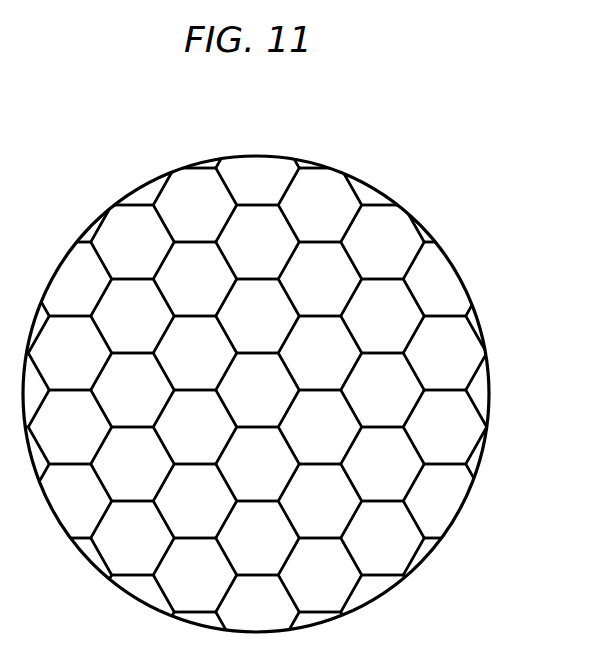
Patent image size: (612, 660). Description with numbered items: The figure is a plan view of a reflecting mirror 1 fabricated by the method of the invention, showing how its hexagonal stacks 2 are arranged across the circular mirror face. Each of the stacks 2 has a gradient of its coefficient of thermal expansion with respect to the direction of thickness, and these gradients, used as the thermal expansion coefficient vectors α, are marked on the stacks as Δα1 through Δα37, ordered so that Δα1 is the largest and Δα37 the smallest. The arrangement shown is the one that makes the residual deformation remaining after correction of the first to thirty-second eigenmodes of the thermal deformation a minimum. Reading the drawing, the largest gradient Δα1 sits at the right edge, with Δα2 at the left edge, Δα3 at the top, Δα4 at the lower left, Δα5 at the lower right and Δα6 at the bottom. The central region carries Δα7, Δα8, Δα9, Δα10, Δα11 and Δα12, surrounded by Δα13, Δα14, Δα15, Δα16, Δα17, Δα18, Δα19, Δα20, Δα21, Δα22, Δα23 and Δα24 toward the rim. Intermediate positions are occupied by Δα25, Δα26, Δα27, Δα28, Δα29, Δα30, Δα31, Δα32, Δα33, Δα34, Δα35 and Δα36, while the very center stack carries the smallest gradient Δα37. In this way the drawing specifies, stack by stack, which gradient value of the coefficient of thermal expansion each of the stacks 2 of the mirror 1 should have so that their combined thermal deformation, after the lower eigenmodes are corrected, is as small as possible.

The reflecting mirror 1 is at (424, 220).
The stacks 2 is at (501, 265).
The CTE gradient Δα 3 is at (258, 168).
The CTE gradient Δα 4 is at (70, 501).
The CTE gradient Δα 5 is at (445, 501).
The CTE gradient Δα 6 is at (258, 612).
The CTE gradient Δα 7 is at (195, 353).
The CTE gradient Δα 8 is at (258, 464).
The CTE gradient Δα 9 is at (320, 353).
The CTE gradient Δα 10 is at (320, 427).
The CTE gradient Δα 11 is at (195, 427).
The CTE gradient Δα 12 is at (258, 316).
The CTE gradient Δα 13 is at (383, 242).
The CTE gradient Δα 14 is at (320, 575).
The CTE gradient Δα 15 is at (70, 353).
The CTE gradient Δα 16 is at (445, 353).
The CTE gradient Δα 17 is at (133, 538).
The CTE gradient Δα 18 is at (195, 205).
The CTE gradient Δα 19 is at (133, 242).
The CTE gradient Δα 20 is at (445, 427).
The CTE gradient Δα 21 is at (195, 575).
The CTE gradient Δα 22 is at (70, 427).
The CTE gradient Δα 23 is at (320, 205).
The CTE gradient Δα 24 is at (383, 538).
The CTE gradient Δα 25 is at (133, 390).
The CTE gradient Δα 26 is at (320, 279).
The CTE gradient Δα 27 is at (320, 501).
The CTE gradient Δα 28 is at (195, 501).
The CTE gradient Δα 29 is at (195, 279).
The CTE gradient Δα 30 is at (383, 390).
The CTE gradient Δα 31 is at (383, 464).
The CTE gradient Δα 32 is at (258, 242).
The CTE gradient Δα 33 is at (133, 464).
The CTE gradient Δα 34 is at (258, 538).
The CTE gradient Δα 35 is at (133, 316).
The CTE gradient Δα 36 is at (383, 316).
The CTE gradient Δα 37 is at (258, 390).